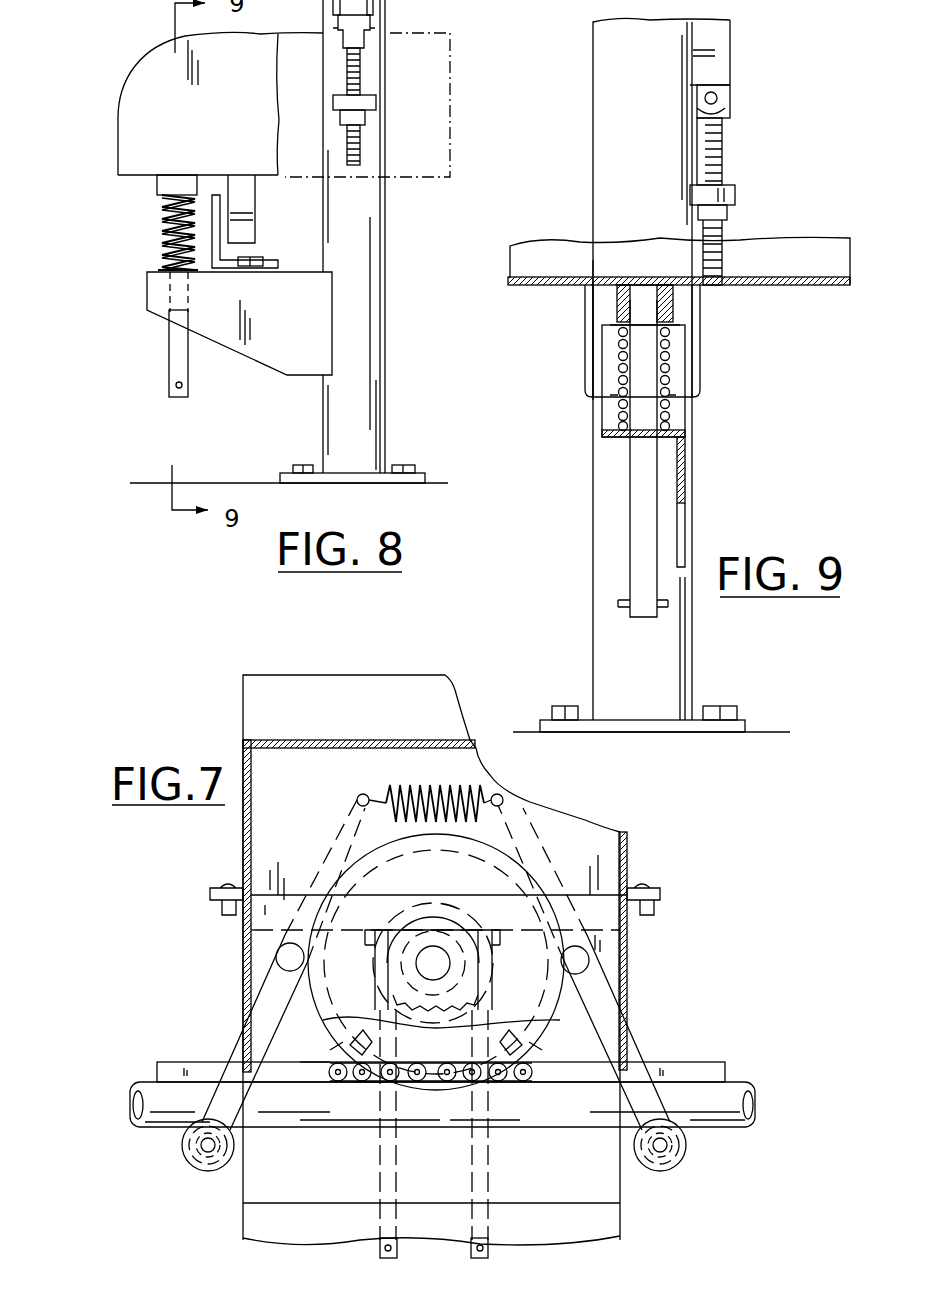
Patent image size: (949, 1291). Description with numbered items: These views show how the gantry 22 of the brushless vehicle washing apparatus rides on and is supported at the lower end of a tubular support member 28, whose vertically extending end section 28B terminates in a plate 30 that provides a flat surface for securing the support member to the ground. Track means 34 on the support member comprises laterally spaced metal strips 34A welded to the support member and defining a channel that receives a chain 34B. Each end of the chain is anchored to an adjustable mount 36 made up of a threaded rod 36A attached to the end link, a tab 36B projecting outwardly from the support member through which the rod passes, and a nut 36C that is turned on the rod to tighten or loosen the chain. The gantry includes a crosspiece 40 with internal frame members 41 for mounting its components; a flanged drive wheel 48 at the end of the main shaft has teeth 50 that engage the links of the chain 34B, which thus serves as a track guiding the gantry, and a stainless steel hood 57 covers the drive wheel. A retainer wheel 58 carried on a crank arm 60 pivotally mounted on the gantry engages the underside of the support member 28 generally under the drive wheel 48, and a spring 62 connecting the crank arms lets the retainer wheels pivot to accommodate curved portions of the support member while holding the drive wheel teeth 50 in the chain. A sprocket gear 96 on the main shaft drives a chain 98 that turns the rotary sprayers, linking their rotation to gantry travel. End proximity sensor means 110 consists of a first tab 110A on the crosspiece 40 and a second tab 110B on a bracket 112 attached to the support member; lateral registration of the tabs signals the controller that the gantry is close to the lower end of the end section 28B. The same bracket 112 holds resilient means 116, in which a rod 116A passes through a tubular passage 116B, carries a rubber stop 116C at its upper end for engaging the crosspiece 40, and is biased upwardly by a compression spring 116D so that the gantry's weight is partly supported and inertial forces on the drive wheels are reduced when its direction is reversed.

In FIG. 7, the gantry 22 is at (226, 696).
In FIG. 8, the support member 28 is at (388, 196).
In FIG. 9, the support member 28 is at (593, 95).
In FIG. 7, the support member 28 is at (145, 1076).
In FIG. 8, the end section 28B is at (372, 284).
In FIG. 9, the end section 28B is at (623, 168).
In FIG. 8, the plate 30 is at (413, 482).
In FIG. 9, the plate 30 is at (696, 727).
In FIG. 9, the track means 34 is at (744, 37).
In FIG. 7, the track means 34 is at (193, 1056).
In FIG. 9, the metal strip 34A is at (718, 45).
In FIG. 7, the metal strip 34A is at (323, 1078).
In FIG. 9, the chain 34B is at (718, 98).
In FIG. 7, the chain 34B is at (367, 1077).
In FIG. 8, the adjustable mount 36 is at (402, 73).
In FIG. 9, the adjustable mount 36 is at (760, 202).
In FIG. 8, the threaded rod 36A is at (347, 75).
In FIG. 9, the threaded rod 36A is at (713, 148).
In FIG. 9, the tab 36B is at (737, 190).
In FIG. 8, the nut 36C is at (364, 118).
In FIG. 9, the nut 36C is at (720, 213).
In FIG. 8, the crosspiece 40 is at (147, 82).
In FIG. 9, the crosspiece 40 is at (825, 257).
In FIG. 7, the crosspiece 40 is at (318, 675).
In FIG. 7, the internal frame member 41 is at (590, 893).
In FIG. 7, the drive wheel 48 is at (557, 1020).
In FIG. 7, the teeth 50 is at (525, 1062).
In FIG. 7, the hood 57 is at (285, 741).
In FIG. 7, the retainer wheel 58 is at (193, 1168).
In FIG. 7, the crank arm 60 is at (270, 1002).
In FIG. 7, the spring 62 is at (492, 763).
In FIG. 7, the sprocket gear 96 is at (483, 988).
In FIG. 7, the chain 98 is at (378, 1147).
In FIG. 8, the end proximity sensor means 110 is at (268, 222).
In FIG. 9, the end proximity sensor means 110 is at (708, 342).
In FIG. 8, the first tab 110A is at (243, 234).
In FIG. 9, the first tab 110A is at (690, 310).
In FIG. 8, the second tab 110B is at (212, 240).
In FIG. 9, the second tab 110B is at (677, 370).
In FIG. 8, the bracket 112 is at (268, 357).
In FIG. 9, the bracket 112 is at (685, 478).
In FIG. 8, the resilient means 116 is at (150, 229).
In FIG. 9, the resilient means 116 is at (612, 375).
In FIG. 8, the rod 116A is at (168, 352).
In FIG. 9, the rod 116A is at (633, 488).
In FIG. 9, the tubular passage 116B is at (668, 413).
In FIG. 8, the stop 116C is at (157, 186).
In FIG. 9, the stop 116C is at (615, 300).
In FIG. 8, the compression spring 116D is at (160, 252).
In FIG. 9, the compression spring 116D is at (618, 337).